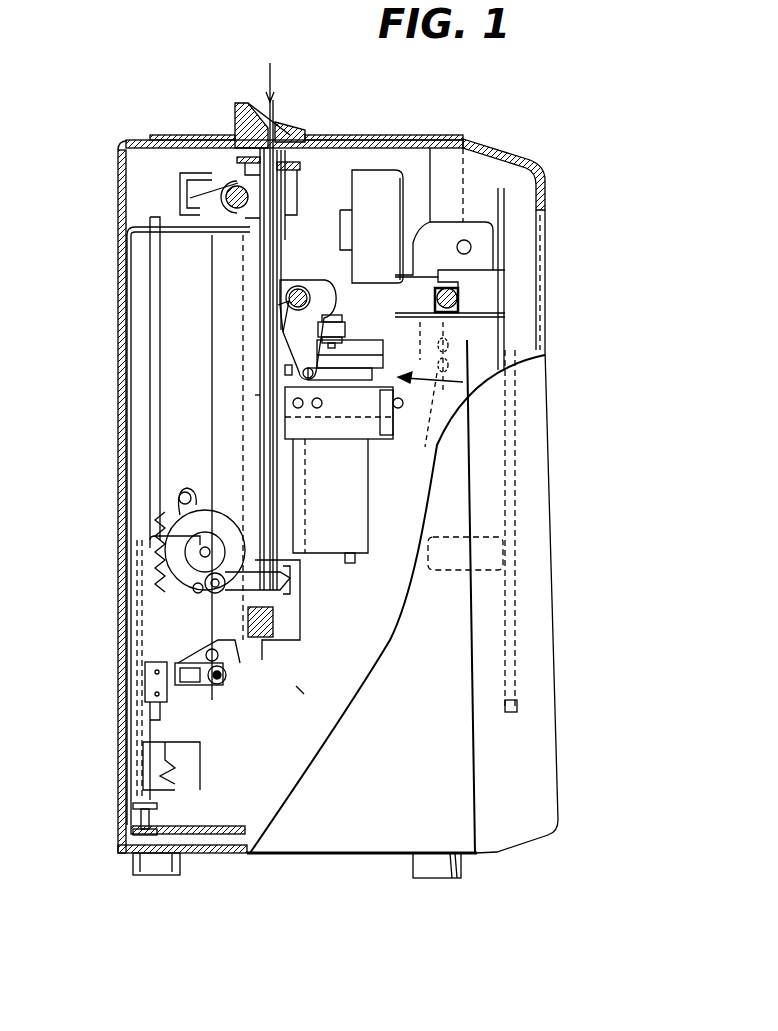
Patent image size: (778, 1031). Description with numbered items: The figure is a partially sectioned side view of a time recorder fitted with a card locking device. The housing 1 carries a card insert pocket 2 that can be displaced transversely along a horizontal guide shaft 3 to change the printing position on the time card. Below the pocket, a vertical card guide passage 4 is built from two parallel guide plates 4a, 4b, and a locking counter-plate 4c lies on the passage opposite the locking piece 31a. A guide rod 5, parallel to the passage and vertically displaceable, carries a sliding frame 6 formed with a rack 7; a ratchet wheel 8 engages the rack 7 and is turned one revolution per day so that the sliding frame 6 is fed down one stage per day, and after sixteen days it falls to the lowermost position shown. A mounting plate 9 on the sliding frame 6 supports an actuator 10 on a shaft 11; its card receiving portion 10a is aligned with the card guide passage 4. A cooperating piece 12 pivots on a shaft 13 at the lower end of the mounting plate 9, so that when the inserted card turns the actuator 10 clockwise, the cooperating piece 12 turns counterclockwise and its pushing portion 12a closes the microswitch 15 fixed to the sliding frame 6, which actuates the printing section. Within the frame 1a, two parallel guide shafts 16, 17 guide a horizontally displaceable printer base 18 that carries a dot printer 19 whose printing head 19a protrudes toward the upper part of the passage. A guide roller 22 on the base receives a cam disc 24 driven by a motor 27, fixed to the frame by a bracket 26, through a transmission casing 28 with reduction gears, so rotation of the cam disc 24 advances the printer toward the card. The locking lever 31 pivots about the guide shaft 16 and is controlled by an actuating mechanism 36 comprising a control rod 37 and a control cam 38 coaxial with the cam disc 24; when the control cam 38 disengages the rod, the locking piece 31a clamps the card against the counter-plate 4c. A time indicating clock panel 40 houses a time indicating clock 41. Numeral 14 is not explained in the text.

The housing 1 is at (118, 205).
The frame 1a is at (445, 222).
The card insert pocket 2 is at (278, 182).
The guide shaft 3 is at (238, 183).
The card guide passage 4 is at (262, 413).
The guide plate 4a is at (257, 398).
The guide plate 4b is at (290, 590).
The locking counter-plate 4c is at (260, 308).
The guide rod 5 is at (163, 462).
The sliding frame 6 is at (200, 590).
The rack 7 is at (170, 700).
The ratchet wheel 8 is at (190, 500).
The mounting plate 9 is at (160, 548).
The actuator 10 is at (340, 665).
The card receiving portion 10a is at (300, 608).
The shaft 11 is at (212, 583).
The cooperating piece 12 is at (226, 685).
The pushing portion 12a is at (200, 690).
The shaft 13 is at (240, 665).
The connecting link 14 is at (300, 690).
The microswitch 15 is at (145, 680).
The guide shaft 16 is at (298, 296).
The guide shaft 17 is at (458, 297).
The printer base 18 is at (438, 270).
The dot printer 19 is at (373, 178).
The printing head 19a is at (282, 228).
The guide roller 22 is at (440, 325).
The cam disc 24 is at (400, 346).
The bracket 26 is at (393, 437).
The motor 27 is at (370, 545).
The transmission casing 28 is at (368, 520).
The locking lever 31 is at (283, 332).
The locking piece 31a is at (289, 302).
The actuating mechanism 36 is at (463, 382).
The control rod 37 is at (405, 393).
The control cam 38 is at (470, 373).
The time indicating clock panel 40 is at (505, 227).
The time indicating clock 41 is at (395, 410).